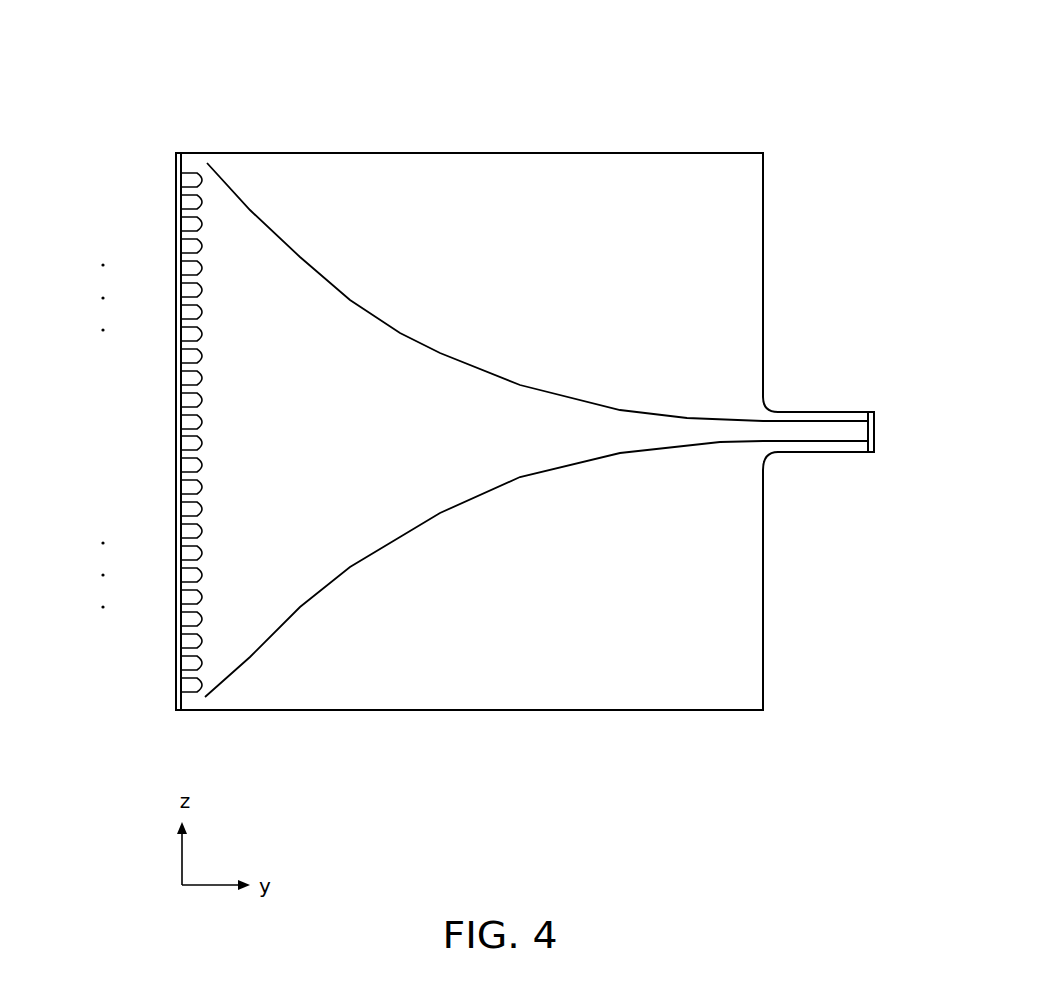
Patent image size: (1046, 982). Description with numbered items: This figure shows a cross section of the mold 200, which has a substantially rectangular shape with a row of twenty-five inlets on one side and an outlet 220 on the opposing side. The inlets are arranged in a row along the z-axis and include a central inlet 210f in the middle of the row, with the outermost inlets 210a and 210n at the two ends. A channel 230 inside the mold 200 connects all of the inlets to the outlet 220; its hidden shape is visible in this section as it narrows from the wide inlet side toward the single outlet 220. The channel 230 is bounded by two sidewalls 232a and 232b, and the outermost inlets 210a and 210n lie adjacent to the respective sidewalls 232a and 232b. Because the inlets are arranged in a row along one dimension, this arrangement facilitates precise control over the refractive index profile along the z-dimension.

The mold 200 is at (468, 106).
The outermost inlet 210a is at (181, 164).
The central inlet 210f is at (177, 436).
The outermost inlet 210n is at (181, 695).
The outlet 220 is at (875, 428).
The channel 230 is at (536, 430).
The sidewall 232a is at (448, 348).
The sidewall 232b is at (385, 543).